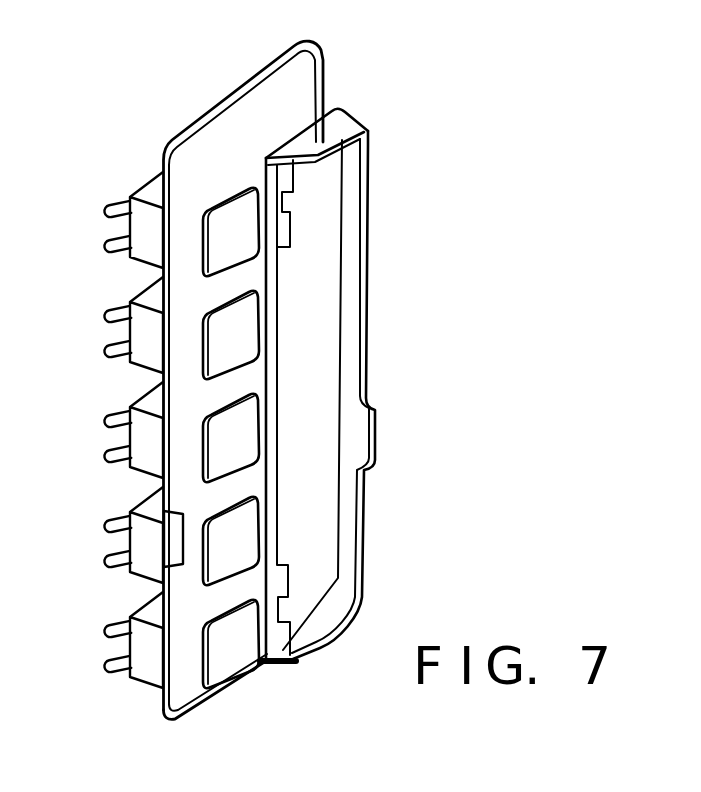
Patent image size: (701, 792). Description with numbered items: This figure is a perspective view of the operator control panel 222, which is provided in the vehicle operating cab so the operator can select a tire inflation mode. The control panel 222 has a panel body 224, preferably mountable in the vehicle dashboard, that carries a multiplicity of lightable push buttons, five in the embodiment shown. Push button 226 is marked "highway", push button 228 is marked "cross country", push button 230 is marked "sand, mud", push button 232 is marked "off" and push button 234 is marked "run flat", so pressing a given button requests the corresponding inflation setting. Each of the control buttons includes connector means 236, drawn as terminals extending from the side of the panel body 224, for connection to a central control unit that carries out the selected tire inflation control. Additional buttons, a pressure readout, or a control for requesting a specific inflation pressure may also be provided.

The control panel 222 is at (417, 175).
The panel body 224 is at (313, 93).
The push button 226 is at (200, 247).
The push button 228 is at (200, 352).
The push button 230 is at (200, 453).
The push button 232 is at (210, 673).
The push button 234 is at (198, 566).
The connector means 236 is at (110, 204).